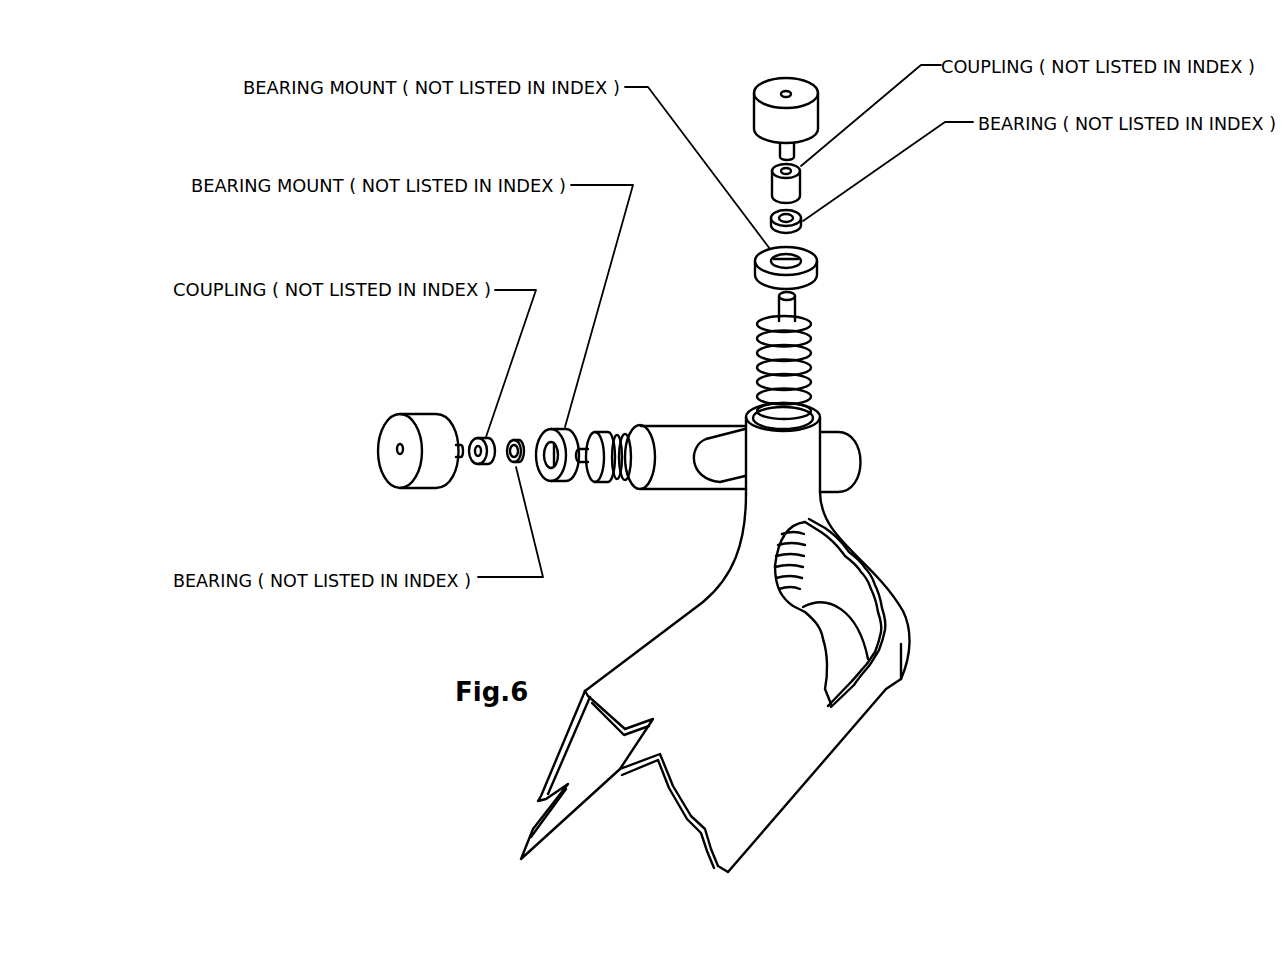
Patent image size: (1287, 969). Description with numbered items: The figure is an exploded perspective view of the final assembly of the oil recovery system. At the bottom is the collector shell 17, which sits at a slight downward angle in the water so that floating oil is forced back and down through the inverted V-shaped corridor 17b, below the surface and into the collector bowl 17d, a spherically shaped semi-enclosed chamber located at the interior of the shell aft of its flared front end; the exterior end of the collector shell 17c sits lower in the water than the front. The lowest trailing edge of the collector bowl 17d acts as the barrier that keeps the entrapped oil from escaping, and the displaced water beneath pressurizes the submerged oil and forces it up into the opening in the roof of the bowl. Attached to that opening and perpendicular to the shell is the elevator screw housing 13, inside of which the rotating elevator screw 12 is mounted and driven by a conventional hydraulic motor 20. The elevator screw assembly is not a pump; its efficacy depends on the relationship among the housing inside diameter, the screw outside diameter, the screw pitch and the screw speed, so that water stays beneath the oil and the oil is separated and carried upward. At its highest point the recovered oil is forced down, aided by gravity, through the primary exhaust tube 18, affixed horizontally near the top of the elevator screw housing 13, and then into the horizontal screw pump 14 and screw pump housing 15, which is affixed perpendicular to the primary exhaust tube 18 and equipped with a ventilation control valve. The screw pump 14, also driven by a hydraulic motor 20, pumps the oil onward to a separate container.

The elevator screw 12 is at (810, 347).
The elevator screw housing 13 is at (823, 460).
The horizontal screw pump 14 is at (613, 477).
The screw pump housing 15 is at (853, 433).
The collector shell 17 is at (637, 652).
The inverted V-shaped corridor 17b is at (583, 740).
The exterior end of collector shell 17c is at (912, 623).
The collector bowl 17d is at (830, 582).
The primary exhaust tube 18 is at (723, 460).
The hydraulic motor 20 is at (820, 73).